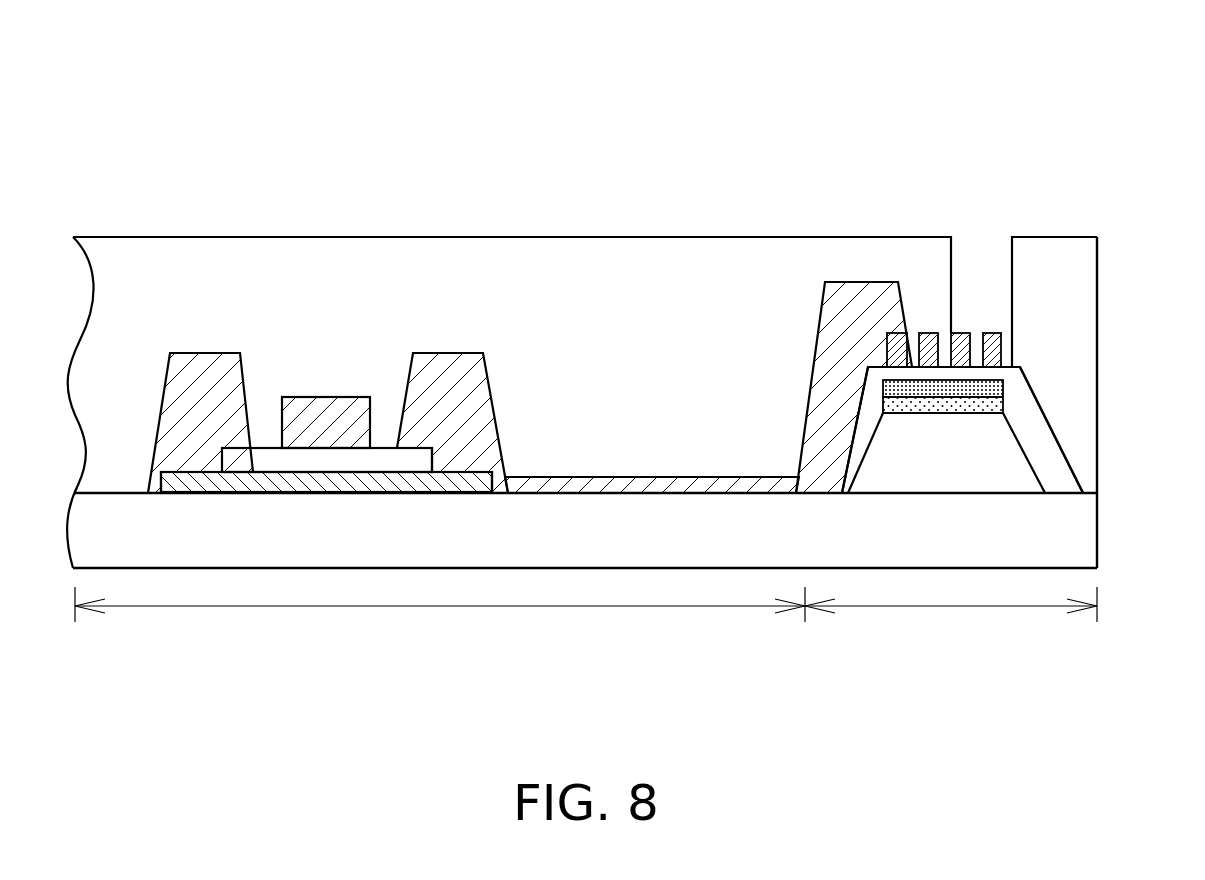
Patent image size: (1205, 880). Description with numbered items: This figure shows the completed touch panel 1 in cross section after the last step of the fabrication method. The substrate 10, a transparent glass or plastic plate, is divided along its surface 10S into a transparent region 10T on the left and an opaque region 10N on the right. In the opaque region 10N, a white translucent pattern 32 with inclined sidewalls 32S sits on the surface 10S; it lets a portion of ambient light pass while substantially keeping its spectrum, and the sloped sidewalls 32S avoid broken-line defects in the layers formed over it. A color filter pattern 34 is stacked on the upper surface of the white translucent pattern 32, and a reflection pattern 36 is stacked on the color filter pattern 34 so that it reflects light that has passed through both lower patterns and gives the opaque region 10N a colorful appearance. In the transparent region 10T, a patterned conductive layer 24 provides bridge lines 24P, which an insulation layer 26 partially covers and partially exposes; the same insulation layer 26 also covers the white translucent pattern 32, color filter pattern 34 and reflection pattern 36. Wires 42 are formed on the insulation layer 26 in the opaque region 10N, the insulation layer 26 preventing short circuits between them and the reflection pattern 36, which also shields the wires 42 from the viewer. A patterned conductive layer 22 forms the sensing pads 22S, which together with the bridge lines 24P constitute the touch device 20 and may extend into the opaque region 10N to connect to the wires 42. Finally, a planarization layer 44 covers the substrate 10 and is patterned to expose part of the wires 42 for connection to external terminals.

The touch panel 1 is at (1034, 70).
The substrate 10 is at (635, 543).
The transparent region 10T is at (440, 619).
The opaque region 10N is at (951, 619).
The surface 10S is at (1073, 491).
The touch device 20 is at (495, 264).
The patterned conductive layer 22 is at (451, 380).
The sensing pads 22S is at (447, 367).
The patterned conductive layer 24 is at (327, 375).
The bridge lines 24P is at (280, 483).
The insulation layer 26 is at (365, 462).
The white translucent pattern 32 is at (932, 468).
The inclined sidewalls 32S is at (858, 457).
The color filter pattern 34 is at (988, 403).
The reflection pattern 36 is at (1003, 383).
The wires 42 is at (987, 333).
The planarization layer 44 is at (637, 395).